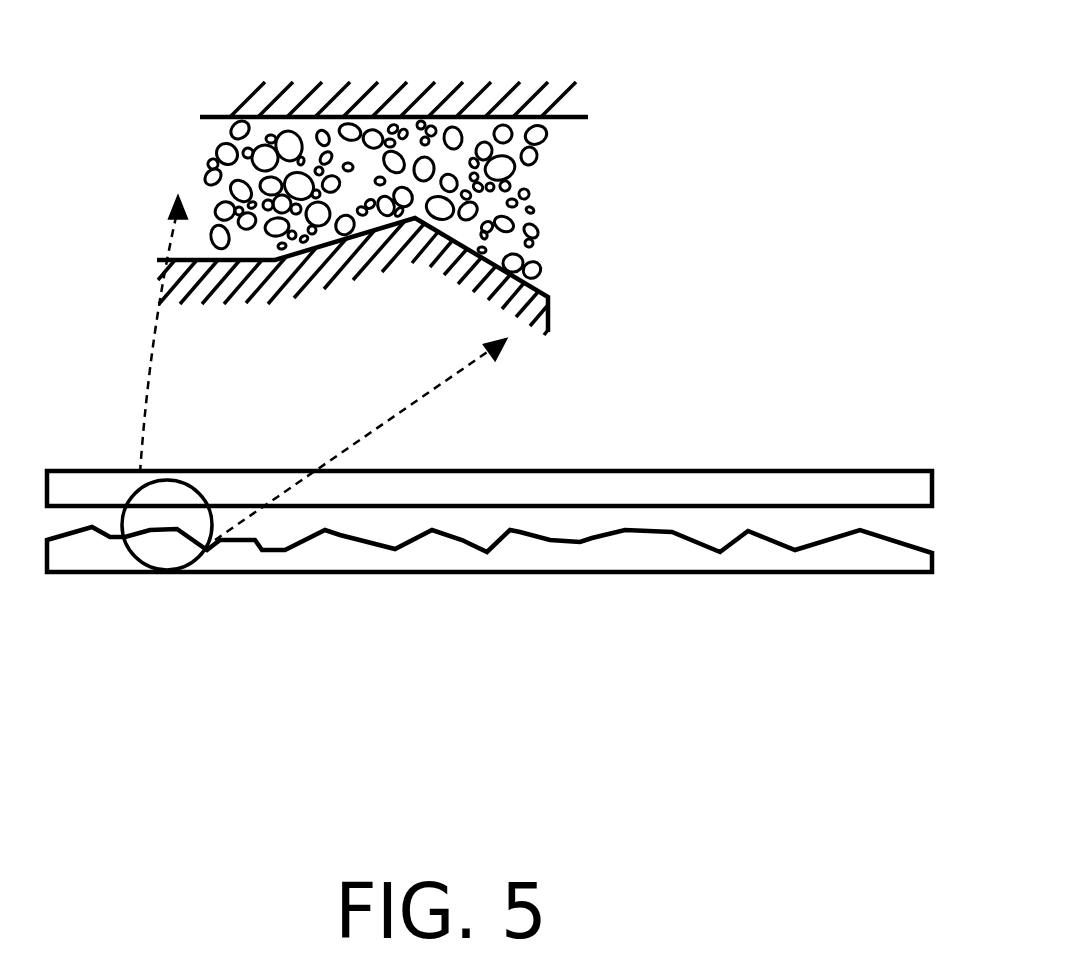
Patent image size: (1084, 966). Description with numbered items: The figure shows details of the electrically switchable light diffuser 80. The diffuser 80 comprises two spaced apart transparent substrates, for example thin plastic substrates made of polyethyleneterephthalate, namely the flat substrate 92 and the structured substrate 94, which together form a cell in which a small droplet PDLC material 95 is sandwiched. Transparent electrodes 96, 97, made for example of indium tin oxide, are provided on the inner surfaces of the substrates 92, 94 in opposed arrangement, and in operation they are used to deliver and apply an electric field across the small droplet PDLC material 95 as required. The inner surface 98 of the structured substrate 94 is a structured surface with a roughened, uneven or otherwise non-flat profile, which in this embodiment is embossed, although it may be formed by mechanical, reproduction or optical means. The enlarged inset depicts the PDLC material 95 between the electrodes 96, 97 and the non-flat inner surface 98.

The electrically switchable light diffuser 80 is at (552, 660).
The flat substrate 92 is at (748, 472).
The structured substrate 94 is at (770, 557).
The small droplet PDLC material 95 is at (550, 193).
The transparent electrode 96 is at (580, 117).
The transparent electrode 97 is at (543, 285).
The inner surface 98 is at (330, 258).